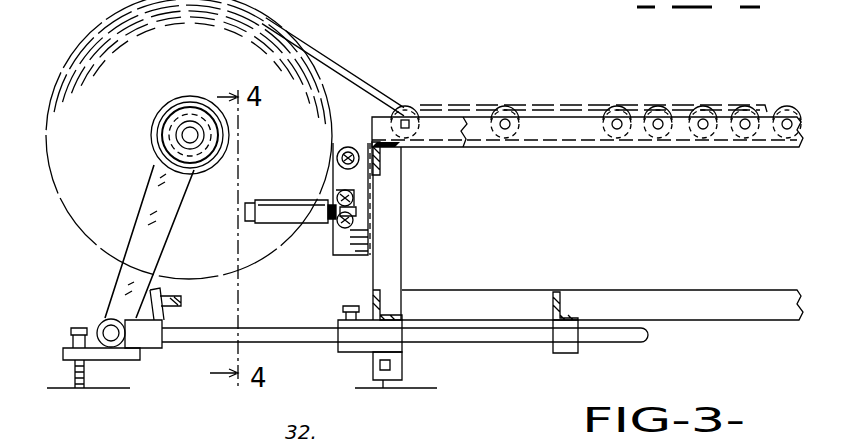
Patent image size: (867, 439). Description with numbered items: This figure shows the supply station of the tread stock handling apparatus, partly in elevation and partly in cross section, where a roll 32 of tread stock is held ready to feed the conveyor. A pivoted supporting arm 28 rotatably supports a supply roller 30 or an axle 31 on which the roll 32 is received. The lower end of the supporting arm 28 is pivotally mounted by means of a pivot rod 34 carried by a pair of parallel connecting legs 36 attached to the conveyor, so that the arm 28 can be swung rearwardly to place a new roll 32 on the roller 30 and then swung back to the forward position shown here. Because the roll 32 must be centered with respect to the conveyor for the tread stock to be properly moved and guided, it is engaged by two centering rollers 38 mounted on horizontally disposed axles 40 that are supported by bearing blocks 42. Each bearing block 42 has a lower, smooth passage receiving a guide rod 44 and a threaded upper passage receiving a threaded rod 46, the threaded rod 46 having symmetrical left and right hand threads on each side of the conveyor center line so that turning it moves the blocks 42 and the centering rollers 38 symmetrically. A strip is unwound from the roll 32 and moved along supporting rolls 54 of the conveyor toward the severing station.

The supporting arm 28 is at (141, 215).
The supply roller 30 is at (163, 142).
The axle 31 is at (182, 134).
The roll of tread stock 32 is at (70, 220).
The pivot rod 34 is at (98, 325).
The connecting legs 36 is at (228, 316).
The centering roller 38 is at (252, 223).
The axle 40 is at (357, 210).
The bearing block 42 is at (353, 194).
The guide rod 44 is at (343, 228).
The threaded rod 46 is at (337, 197).
The supporting rolls 54 is at (497, 104).